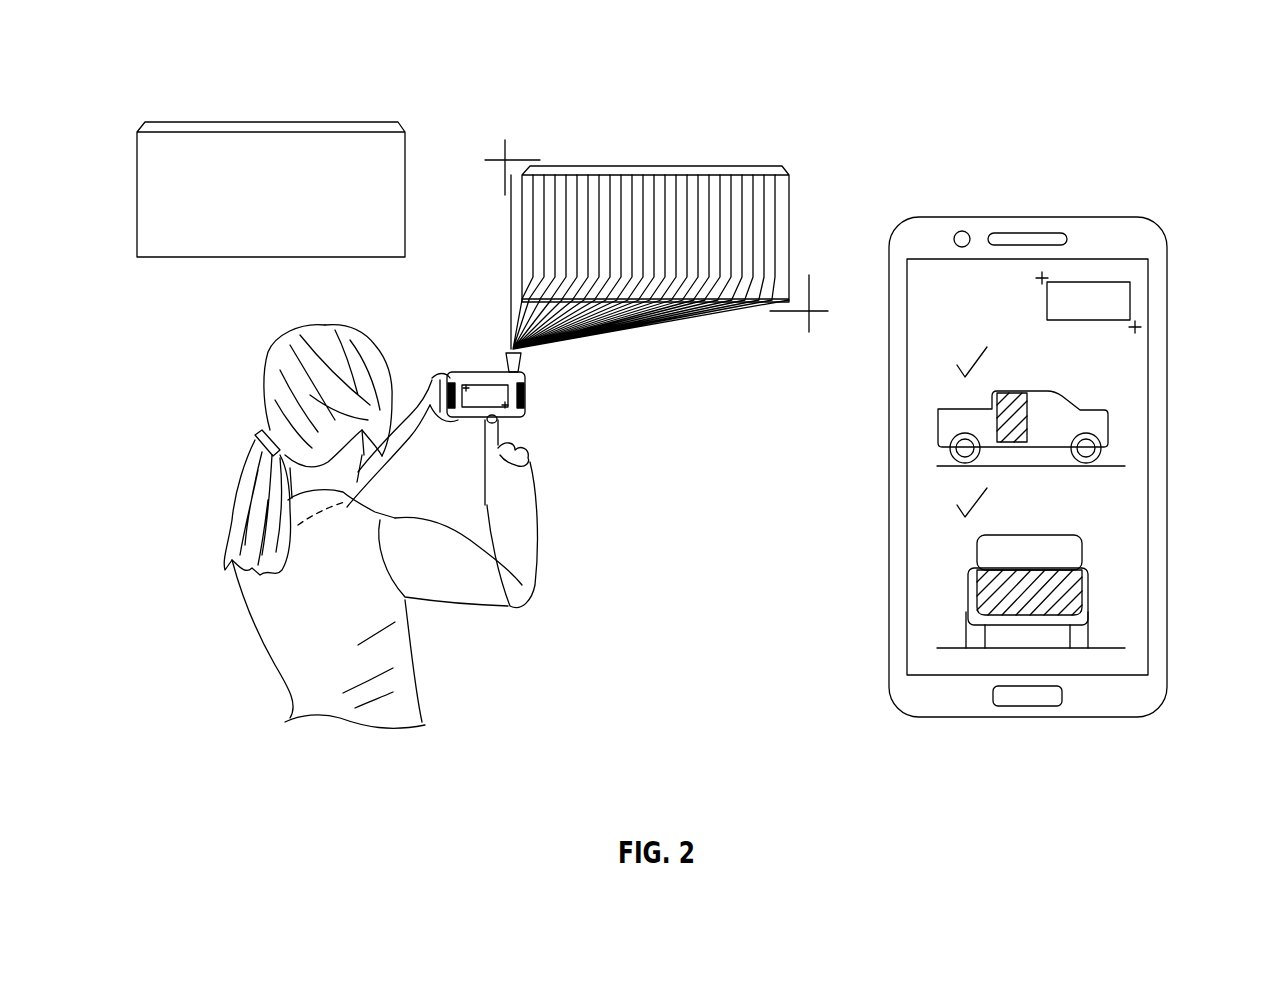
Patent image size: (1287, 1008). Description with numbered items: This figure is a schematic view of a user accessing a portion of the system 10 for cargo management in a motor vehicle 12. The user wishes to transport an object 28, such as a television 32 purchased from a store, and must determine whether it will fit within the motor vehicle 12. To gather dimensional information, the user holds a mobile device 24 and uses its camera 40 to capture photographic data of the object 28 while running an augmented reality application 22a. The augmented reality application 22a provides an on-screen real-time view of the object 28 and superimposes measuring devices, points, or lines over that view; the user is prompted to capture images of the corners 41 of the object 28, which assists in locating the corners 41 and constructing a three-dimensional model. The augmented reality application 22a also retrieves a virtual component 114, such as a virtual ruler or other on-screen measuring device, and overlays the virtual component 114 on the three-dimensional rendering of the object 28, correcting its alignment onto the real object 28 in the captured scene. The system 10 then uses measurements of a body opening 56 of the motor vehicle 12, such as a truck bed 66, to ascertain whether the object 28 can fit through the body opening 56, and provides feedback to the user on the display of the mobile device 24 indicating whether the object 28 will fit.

The system 10 is at (930, 127).
The motor vehicle 12 is at (1110, 428).
The augmented reality application 22a is at (473, 430).
The mobile device 24 is at (490, 372).
The object 28 is at (691, 339).
The television (TV) 32 is at (178, 122).
The camera 40 is at (510, 350).
The corners 41 is at (525, 170).
The body opening 56 is at (890, 454).
The truck bed 66 is at (960, 410).
The virtual component 114 is at (450, 128).